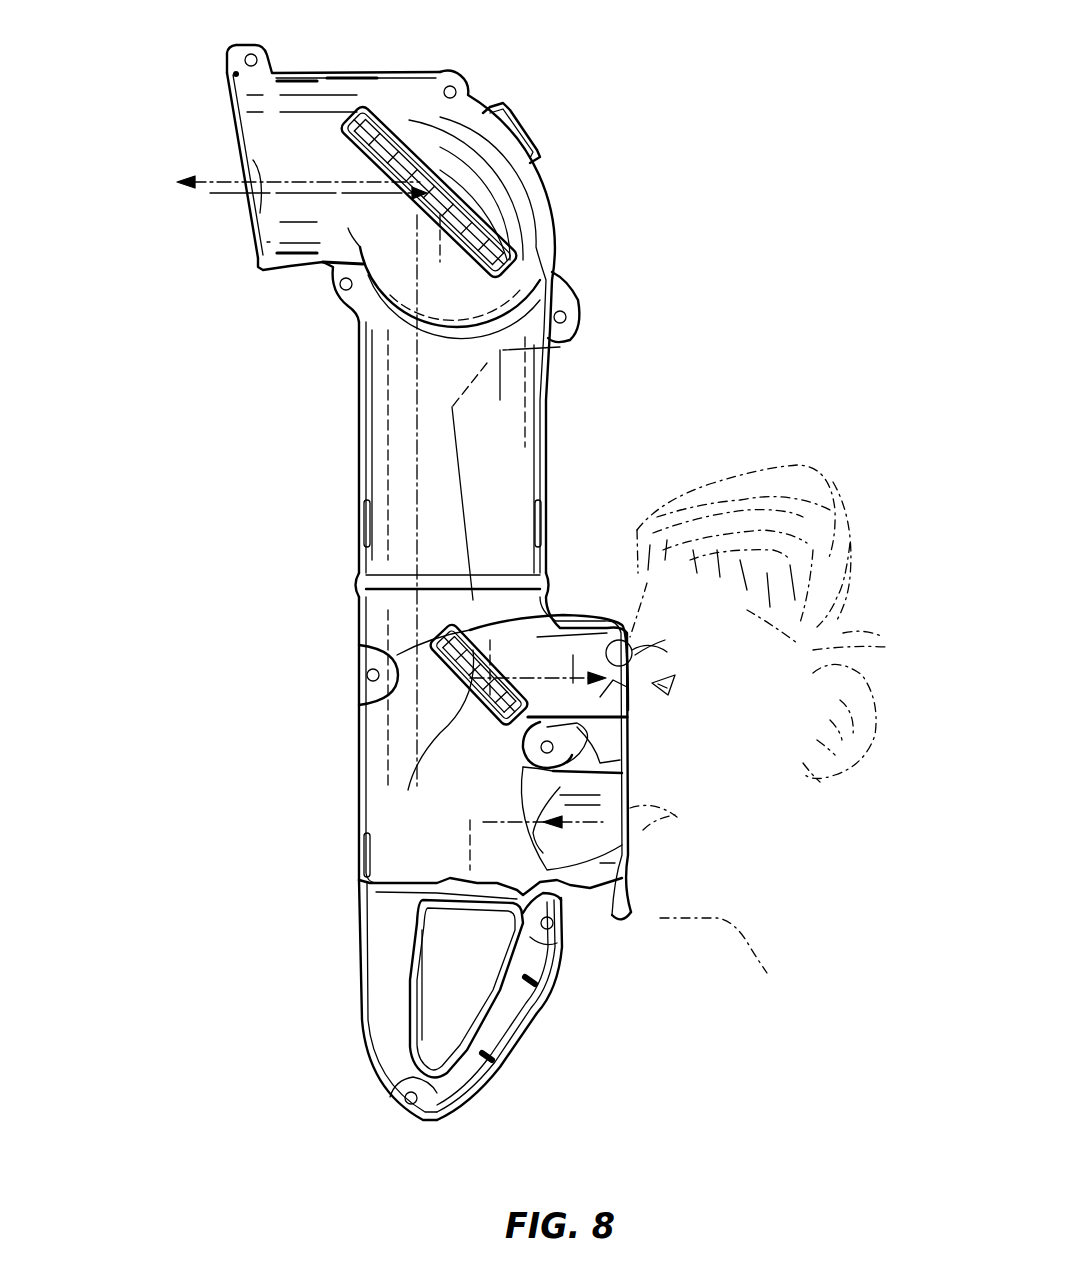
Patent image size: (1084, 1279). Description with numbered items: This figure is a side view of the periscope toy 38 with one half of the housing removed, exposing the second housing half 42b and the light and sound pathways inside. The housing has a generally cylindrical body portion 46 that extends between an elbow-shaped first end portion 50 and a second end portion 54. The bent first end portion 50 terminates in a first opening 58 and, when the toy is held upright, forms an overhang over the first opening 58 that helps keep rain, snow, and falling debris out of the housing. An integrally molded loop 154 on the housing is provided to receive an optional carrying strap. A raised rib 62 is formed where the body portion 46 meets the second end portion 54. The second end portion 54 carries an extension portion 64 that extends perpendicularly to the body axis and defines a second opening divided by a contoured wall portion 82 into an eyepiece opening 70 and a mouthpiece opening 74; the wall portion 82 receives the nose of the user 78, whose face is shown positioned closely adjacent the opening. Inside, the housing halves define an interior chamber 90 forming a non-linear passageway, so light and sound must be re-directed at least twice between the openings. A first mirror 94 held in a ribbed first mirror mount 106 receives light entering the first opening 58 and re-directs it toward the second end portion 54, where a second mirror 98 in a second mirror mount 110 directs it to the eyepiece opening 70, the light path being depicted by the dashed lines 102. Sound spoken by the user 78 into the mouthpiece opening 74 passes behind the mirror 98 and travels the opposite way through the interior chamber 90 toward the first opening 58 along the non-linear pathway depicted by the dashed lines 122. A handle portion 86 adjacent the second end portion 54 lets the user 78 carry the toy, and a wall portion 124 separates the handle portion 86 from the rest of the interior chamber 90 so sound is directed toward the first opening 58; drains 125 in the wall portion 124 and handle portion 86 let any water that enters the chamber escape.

The periscope toy 38 is at (354, 72).
The mirror 94 is at (388, 118).
The first opening 58 is at (232, 108).
The dashed lines 122 is at (243, 157).
The dashed lines 102 is at (243, 227).
The loop 154 is at (520, 120).
The first end portion 50 is at (542, 197).
The first mirror mount 106 is at (540, 262).
The second housing half 42b is at (547, 388).
The body portion 46 is at (543, 453).
The interior chamber 90 is at (403, 407).
The raised rib 62 is at (357, 583).
The extension portion 64 is at (612, 625).
The user 78 is at (812, 466).
The eyepiece opening 70 is at (640, 647).
The second mirror mount 110 is at (383, 653).
The second end portion 54 is at (377, 740).
The wall portion 82 is at (605, 752).
The mirror 98 is at (528, 735).
The wall portion 124 is at (400, 900).
The drains 125 is at (478, 905).
The mouthpiece opening 74 is at (612, 885).
The handle portion 86 is at (507, 1023).